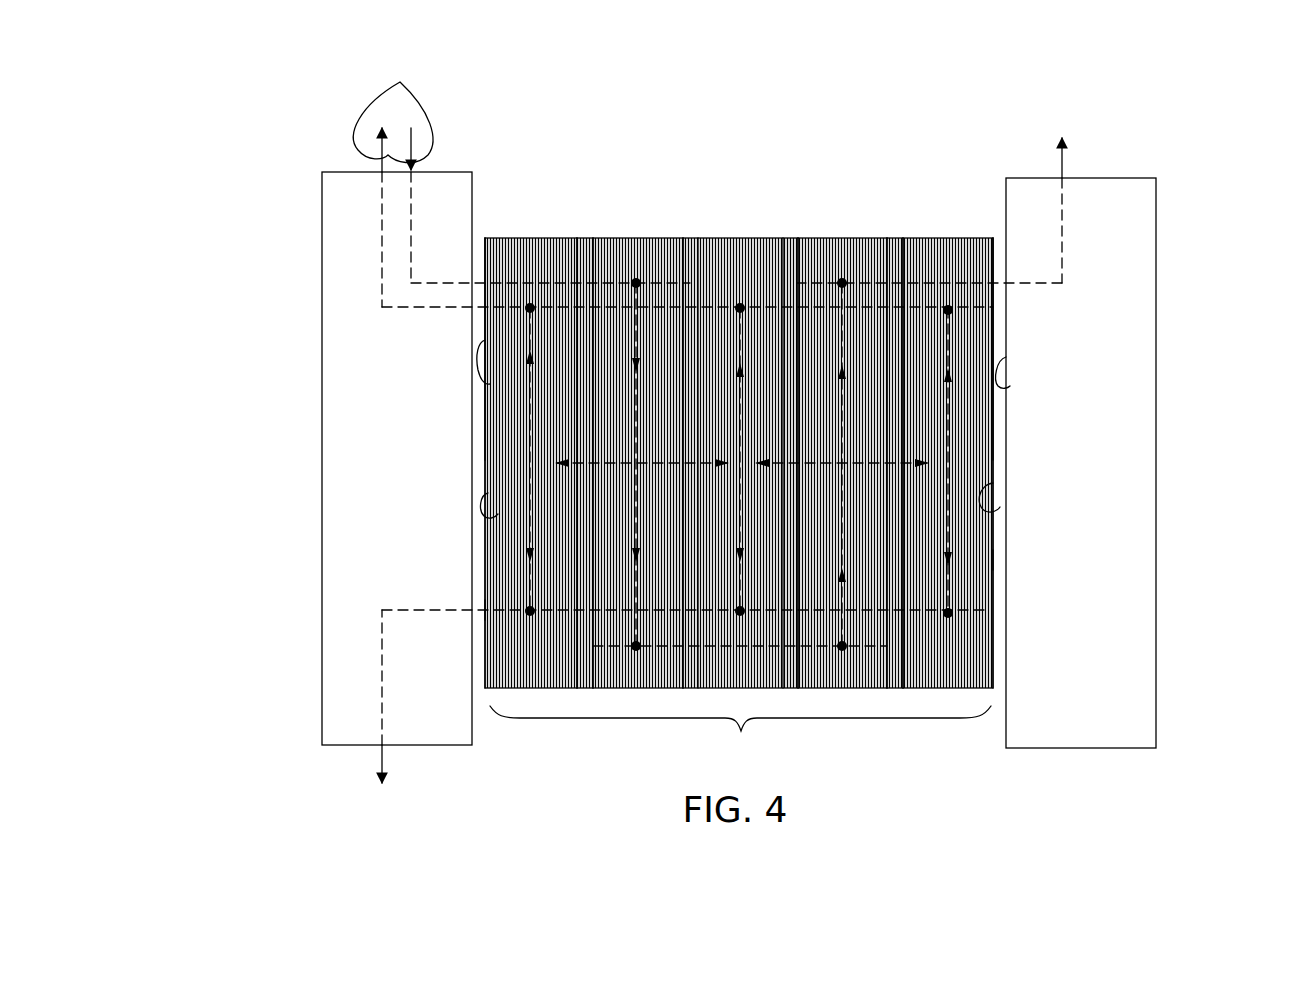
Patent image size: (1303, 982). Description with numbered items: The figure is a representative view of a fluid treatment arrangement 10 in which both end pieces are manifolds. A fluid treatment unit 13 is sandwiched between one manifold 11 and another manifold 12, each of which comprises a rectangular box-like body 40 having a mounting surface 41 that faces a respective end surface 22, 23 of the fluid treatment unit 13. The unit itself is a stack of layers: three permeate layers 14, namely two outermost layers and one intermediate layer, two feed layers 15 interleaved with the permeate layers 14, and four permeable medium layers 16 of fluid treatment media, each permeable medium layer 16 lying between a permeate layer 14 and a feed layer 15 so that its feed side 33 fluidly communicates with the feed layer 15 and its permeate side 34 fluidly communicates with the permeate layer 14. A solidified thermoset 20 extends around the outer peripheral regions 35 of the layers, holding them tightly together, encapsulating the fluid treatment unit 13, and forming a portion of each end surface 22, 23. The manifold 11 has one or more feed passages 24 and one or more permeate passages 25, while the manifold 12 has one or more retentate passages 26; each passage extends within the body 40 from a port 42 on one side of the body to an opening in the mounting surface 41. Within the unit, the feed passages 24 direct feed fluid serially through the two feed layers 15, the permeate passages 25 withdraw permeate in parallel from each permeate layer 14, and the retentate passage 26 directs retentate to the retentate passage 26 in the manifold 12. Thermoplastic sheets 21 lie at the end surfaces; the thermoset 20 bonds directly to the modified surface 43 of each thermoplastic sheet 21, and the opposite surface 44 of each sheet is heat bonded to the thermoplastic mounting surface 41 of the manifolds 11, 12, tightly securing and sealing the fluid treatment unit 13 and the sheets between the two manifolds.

The fluid treatment arrangement 10 is at (1134, 141).
The manifold 11 is at (350, 190).
The manifold 12 is at (1128, 197).
The body 40 is at (725, 442).
The fluid treatment unit 13 is at (740, 732).
The permeate layer 14 is at (563, 252).
The feed layer 15 is at (607, 250).
The permeable medium layer 16 is at (690, 250).
The solidified thermoset 20 is at (884, 498).
The outer peripheral region 35 is at (773, 567).
The thermoplastic sheet 21 is at (485, 455).
The end surface 22 is at (485, 420).
The end surface 23 is at (993, 428).
The feed passage 24 is at (506, 283).
The permeate passage 25 is at (500, 308).
The retentate passage 26 is at (957, 285).
The feed side 33 is at (593, 276).
The permeate side 34 is at (573, 292).
The mounting surface 41 is at (486, 345).
The port 42 is at (270, 793).
The modified surface 43 is at (488, 493).
The opposite surface 44 is at (505, 607).